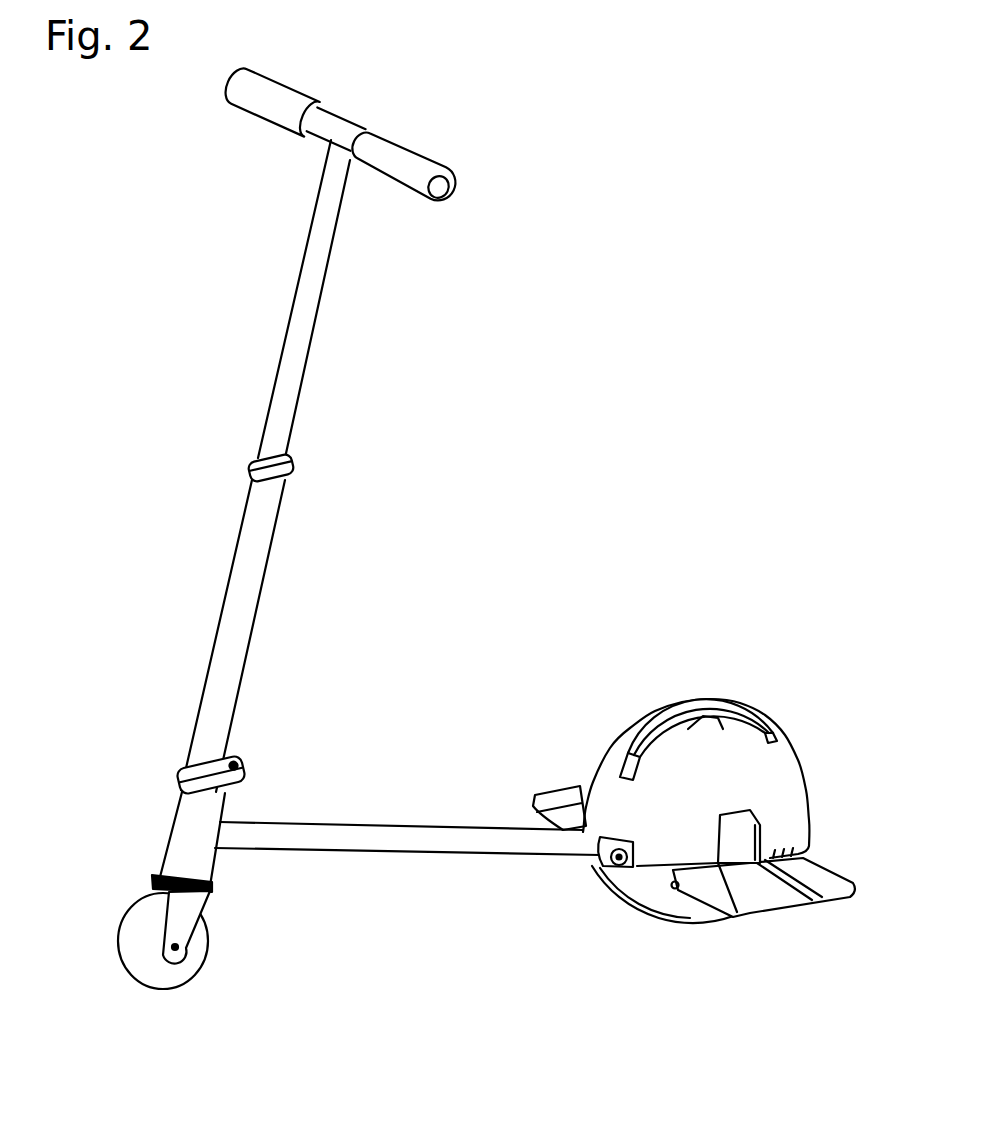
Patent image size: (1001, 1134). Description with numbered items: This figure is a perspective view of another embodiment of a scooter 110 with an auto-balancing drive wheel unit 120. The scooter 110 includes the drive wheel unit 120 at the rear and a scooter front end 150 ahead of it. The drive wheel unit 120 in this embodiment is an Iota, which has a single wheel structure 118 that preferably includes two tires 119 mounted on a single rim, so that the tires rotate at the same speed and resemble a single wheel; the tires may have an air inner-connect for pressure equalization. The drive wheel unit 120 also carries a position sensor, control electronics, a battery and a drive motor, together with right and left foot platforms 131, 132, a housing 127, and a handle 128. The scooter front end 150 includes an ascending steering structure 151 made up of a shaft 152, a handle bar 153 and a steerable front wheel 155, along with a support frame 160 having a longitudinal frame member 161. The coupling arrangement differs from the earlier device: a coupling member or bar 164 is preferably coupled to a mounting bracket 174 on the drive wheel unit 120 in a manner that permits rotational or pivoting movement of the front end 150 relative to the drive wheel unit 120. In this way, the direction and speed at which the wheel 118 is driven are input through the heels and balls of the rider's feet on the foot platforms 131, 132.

The scooter 110 is at (649, 386).
The single wheel structure 118 is at (703, 963).
The tires 119 is at (613, 890).
The auto-balancing drive wheel unit 120 is at (757, 659).
The housing 127 is at (795, 758).
The handle 128 is at (763, 718).
The right foot platform 131 is at (840, 880).
The left foot platform 132 is at (535, 797).
The scooter front end 150 is at (345, 1005).
The steering assembly 151 is at (156, 403).
The shaft 152 is at (292, 424).
The handle bar 153 is at (407, 140).
The steerable front wheel 155 is at (203, 960).
The support frame 160 is at (350, 744).
The longitudinal frame member 161 is at (313, 853).
The coupling member 164 is at (597, 863).
The mounting bracket 174 is at (637, 872).